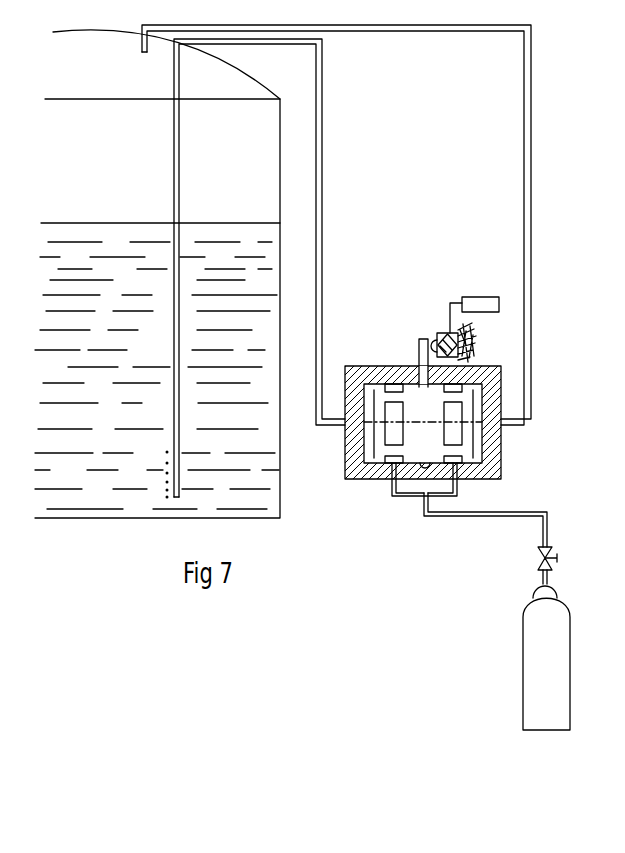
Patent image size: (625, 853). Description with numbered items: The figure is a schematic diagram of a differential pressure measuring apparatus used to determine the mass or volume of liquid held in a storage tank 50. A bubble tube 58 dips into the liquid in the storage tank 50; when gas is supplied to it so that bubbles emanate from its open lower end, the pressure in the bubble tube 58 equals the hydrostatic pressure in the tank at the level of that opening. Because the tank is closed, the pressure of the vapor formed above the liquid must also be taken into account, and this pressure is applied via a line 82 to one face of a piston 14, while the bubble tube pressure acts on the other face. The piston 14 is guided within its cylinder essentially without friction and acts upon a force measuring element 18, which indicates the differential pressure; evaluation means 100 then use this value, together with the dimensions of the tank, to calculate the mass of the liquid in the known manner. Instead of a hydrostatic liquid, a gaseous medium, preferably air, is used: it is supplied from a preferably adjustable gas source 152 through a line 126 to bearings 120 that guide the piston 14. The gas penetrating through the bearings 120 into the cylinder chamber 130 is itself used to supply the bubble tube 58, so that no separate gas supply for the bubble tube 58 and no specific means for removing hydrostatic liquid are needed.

The piston 14 is at (368, 480).
The force measuring element 18 is at (443, 334).
The storage tank 50 is at (280, 510).
The bubble tube 58 is at (322, 177).
The line 82 is at (524, 119).
The evaluation means 100 is at (481, 305).
The bearings 120 is at (445, 393).
The line 126 is at (487, 518).
The cylinder chamber 130 is at (370, 392).
The gas source 152 is at (540, 677).